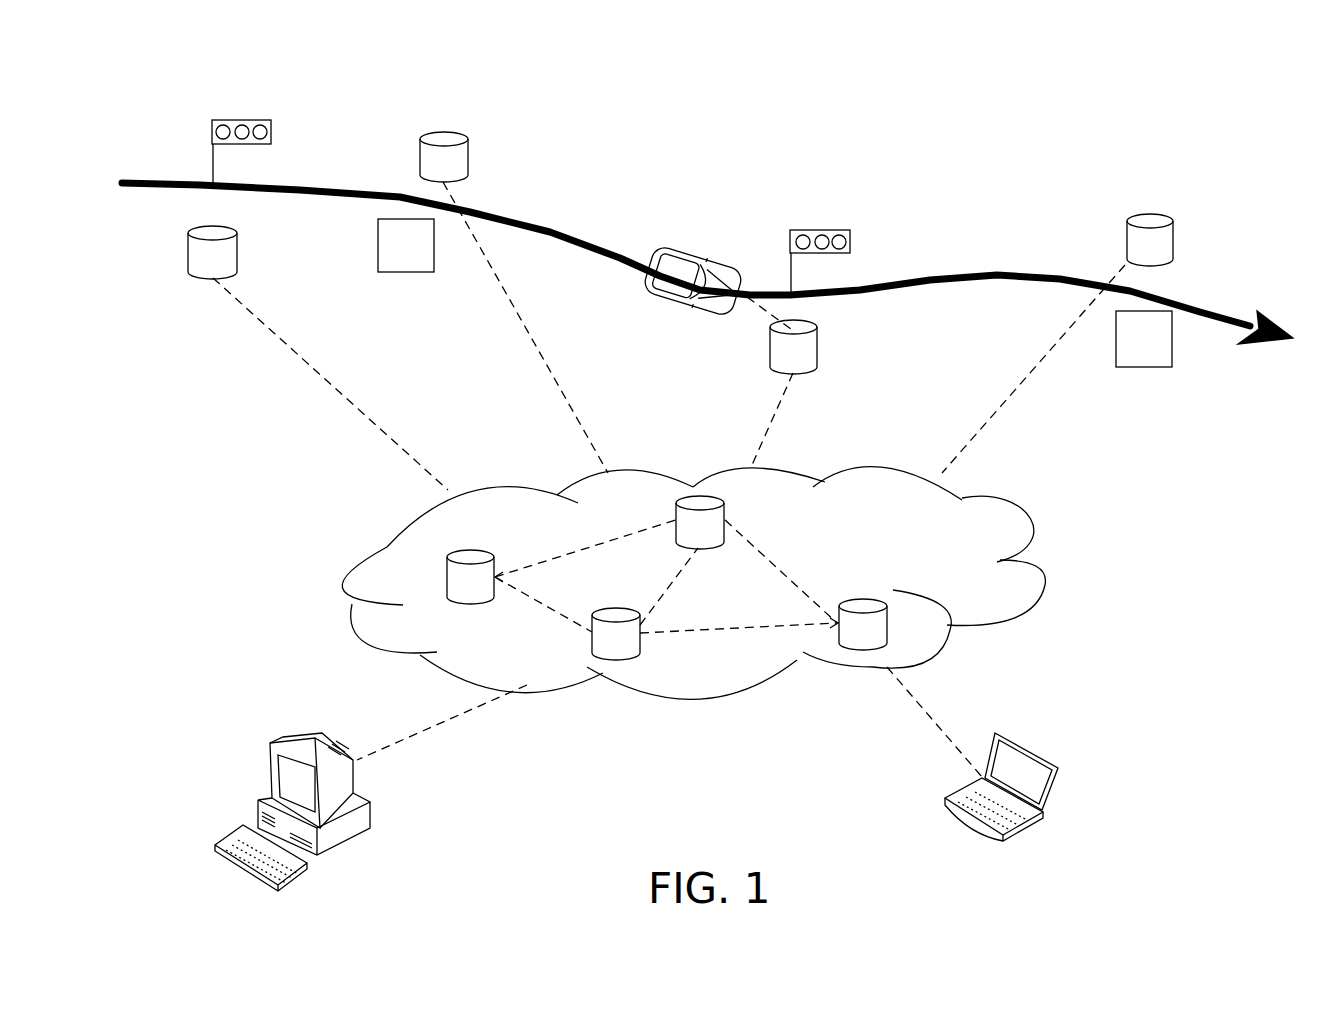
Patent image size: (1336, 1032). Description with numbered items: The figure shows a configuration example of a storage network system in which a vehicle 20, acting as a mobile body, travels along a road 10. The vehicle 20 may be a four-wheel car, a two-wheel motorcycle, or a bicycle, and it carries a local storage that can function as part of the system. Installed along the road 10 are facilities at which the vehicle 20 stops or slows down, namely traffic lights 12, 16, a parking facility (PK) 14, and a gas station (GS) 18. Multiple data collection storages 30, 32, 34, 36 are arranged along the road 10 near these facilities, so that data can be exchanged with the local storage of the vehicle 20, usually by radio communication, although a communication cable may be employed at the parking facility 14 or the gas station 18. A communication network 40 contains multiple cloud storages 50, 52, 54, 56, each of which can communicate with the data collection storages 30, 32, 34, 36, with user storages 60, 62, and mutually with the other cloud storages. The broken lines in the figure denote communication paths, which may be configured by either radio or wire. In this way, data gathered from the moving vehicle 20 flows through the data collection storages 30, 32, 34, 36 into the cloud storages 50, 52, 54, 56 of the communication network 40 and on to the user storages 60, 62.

The road 10 is at (975, 275).
The traffic light 12 is at (271, 120).
The parking (PK) 14 is at (403, 273).
The traffic light 16 is at (850, 230).
The gas station (GS) 18 is at (1145, 368).
The vehicle 20 is at (687, 252).
The data collection storage 30 is at (237, 252).
The data collection storage 32 is at (468, 157).
The data collection storage 34 is at (818, 345).
The data collection storage 36 is at (1175, 238).
The communication network 40 is at (1035, 560).
The cloud storage 50 is at (713, 517).
The cloud storage 52 is at (487, 555).
The cloud storage 54 is at (638, 645).
The cloud storage 56 is at (860, 598).
The user storage 60 is at (1058, 767).
The user storage 62 is at (368, 800).